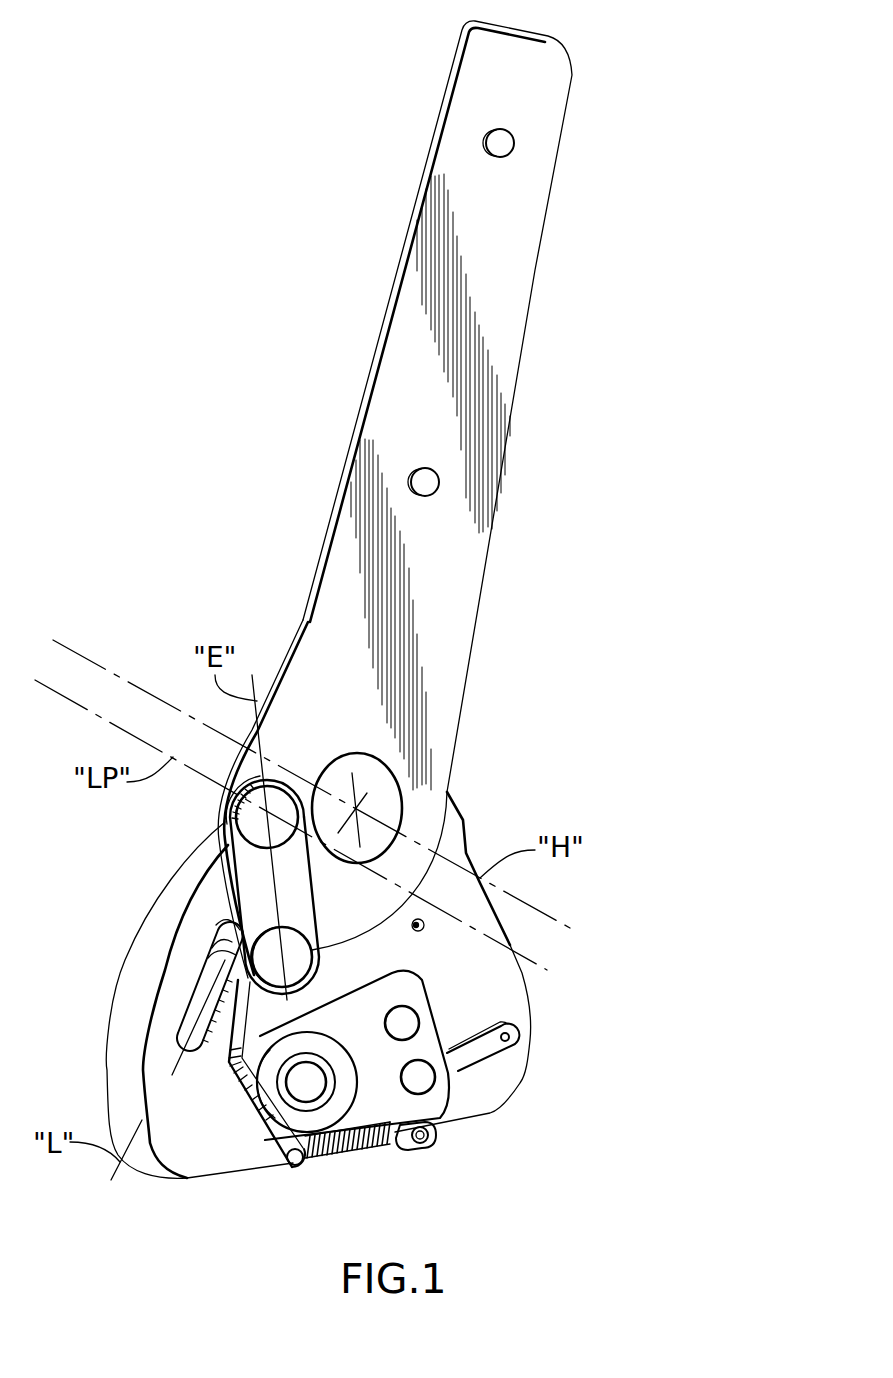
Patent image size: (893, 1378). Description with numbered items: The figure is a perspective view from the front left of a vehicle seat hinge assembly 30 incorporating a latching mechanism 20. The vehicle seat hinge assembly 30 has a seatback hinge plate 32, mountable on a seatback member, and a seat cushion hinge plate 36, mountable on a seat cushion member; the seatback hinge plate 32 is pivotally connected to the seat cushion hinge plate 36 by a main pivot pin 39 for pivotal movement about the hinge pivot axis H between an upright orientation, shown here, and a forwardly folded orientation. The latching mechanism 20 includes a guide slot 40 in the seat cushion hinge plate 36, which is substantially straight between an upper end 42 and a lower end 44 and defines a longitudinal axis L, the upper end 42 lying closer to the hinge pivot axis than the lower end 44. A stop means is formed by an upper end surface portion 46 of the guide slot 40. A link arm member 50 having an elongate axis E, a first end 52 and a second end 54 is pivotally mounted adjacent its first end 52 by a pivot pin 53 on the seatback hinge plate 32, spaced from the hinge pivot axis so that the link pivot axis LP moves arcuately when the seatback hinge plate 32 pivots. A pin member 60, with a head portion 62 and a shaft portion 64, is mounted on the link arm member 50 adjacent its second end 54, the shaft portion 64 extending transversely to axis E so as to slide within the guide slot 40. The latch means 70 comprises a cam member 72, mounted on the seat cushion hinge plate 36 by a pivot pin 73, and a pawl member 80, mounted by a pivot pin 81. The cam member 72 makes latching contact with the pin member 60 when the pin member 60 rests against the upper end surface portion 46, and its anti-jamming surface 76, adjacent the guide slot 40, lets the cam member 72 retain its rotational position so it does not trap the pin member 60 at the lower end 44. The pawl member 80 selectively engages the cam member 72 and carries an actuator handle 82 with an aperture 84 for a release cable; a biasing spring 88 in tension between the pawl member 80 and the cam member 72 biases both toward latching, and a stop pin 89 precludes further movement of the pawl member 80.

The latching mechanism 20 is at (480, 960).
The vehicle seat hinge assembly 30 is at (200, 241).
The seatback hinge plate 32 is at (523, 277).
The seat cushion hinge plate 36 is at (507, 970).
The main pivot pin 39 is at (382, 803).
The guide slot 40 is at (195, 1050).
The upper end 42 is at (254, 927).
The lower end 44 is at (195, 1044).
The upper end surface portion 46 is at (228, 927).
The link arm member 50 is at (296, 897).
The first end 52 is at (268, 782).
The pivot pin 53 is at (277, 793).
The second end 54 is at (300, 1035).
The pin member 60 is at (296, 965).
The head portion 62 is at (292, 937).
The shaft portion 64 is at (222, 925).
The latch means 70 is at (242, 1148).
The cam member 72 is at (243, 1087).
The pivot pin 73 is at (303, 1080).
The anti-jamming surface 76 is at (200, 993).
The pawl member 80 is at (453, 1070).
The pivot pin 81 is at (427, 1112).
The actuator handle 82 is at (483, 1050).
The aperture 84 is at (517, 1035).
The biasing spring 88 is at (350, 1153).
The stop pin 89 is at (402, 1023).